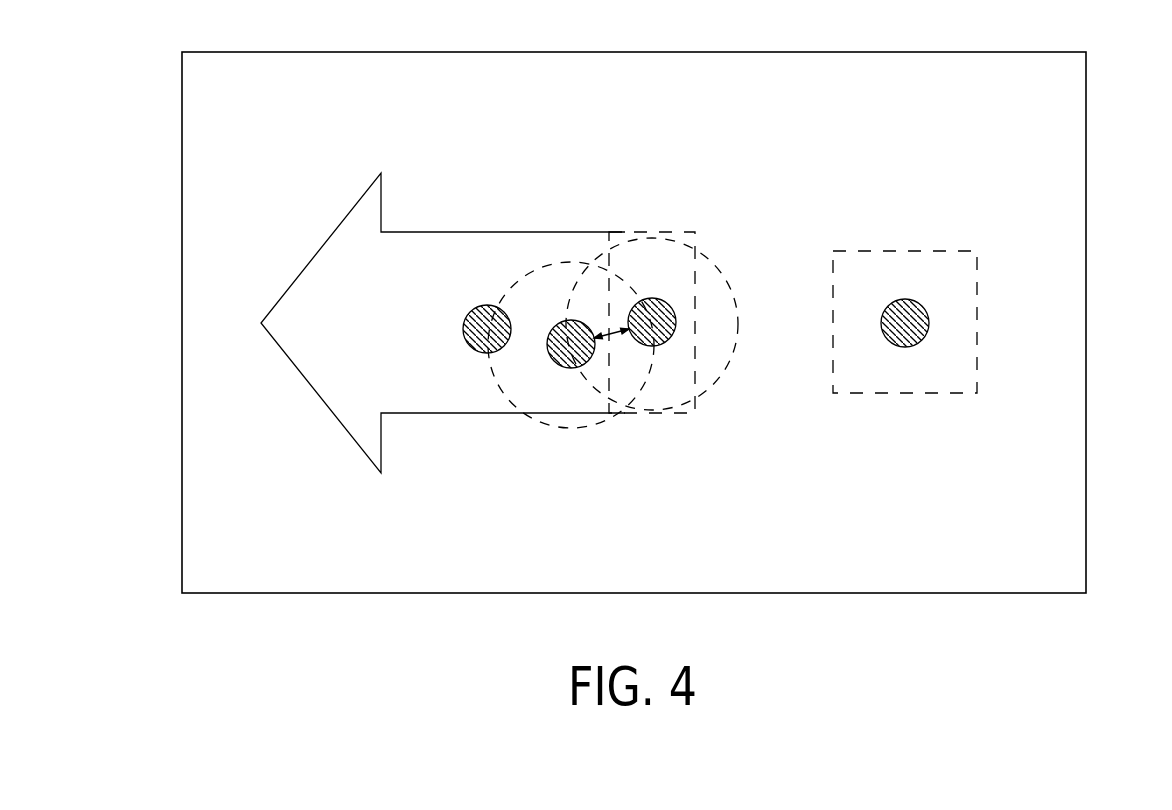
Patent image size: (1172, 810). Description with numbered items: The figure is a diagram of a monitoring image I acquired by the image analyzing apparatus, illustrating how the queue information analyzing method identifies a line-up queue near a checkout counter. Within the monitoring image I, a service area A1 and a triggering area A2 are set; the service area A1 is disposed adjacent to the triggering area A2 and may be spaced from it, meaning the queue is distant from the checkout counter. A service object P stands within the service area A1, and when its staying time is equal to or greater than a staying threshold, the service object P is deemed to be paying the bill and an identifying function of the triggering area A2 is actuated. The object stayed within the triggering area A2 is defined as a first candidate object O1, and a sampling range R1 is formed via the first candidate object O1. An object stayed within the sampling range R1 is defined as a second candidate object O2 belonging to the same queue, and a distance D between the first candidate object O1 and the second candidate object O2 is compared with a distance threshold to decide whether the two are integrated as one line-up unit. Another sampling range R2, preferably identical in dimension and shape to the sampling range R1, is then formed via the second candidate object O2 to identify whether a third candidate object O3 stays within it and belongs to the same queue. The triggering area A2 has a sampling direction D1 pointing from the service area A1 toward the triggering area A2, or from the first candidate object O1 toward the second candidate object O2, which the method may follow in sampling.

The monitoring image I is at (1086, 141).
The sampling direction D1 is at (419, 323).
The sampling range R2 is at (554, 262).
The sampling range R1 is at (637, 240).
The triggering area A2 is at (648, 232).
The service area A1 is at (899, 251).
The service object P is at (926, 318).
The first candidate object O1 is at (660, 345).
The second candidate object O2 is at (569, 368).
The third candidate object O3 is at (479, 352).
The distance D is at (617, 333).